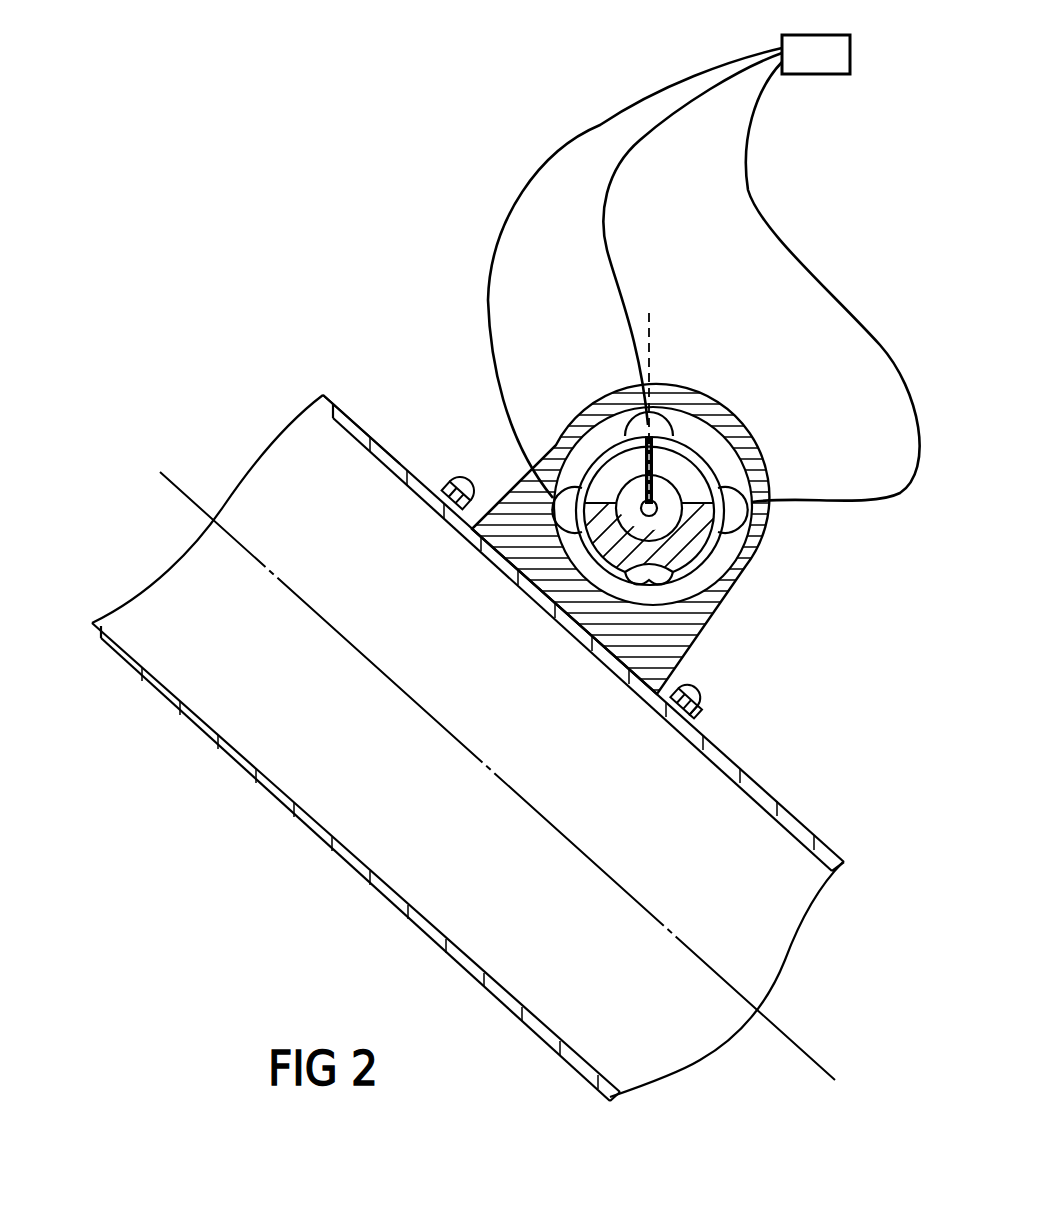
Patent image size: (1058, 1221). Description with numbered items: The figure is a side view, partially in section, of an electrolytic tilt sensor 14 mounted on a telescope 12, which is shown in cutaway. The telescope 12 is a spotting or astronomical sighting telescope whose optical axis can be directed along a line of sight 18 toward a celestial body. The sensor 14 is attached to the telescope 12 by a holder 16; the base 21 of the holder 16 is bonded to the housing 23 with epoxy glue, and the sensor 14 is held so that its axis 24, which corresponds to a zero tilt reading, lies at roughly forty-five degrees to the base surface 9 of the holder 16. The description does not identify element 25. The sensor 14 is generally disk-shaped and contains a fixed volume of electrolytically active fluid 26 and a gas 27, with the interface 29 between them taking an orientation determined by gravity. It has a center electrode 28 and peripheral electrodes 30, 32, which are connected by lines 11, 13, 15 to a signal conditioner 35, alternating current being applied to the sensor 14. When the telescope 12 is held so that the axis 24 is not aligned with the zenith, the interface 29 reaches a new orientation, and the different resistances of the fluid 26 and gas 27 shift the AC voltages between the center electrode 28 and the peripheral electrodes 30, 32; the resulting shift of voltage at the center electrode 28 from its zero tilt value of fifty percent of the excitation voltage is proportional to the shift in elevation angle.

The base surface 9 is at (550, 607).
The line 11 is at (487, 236).
The telescope 12 is at (372, 438).
The line 13 is at (604, 235).
The electrolytic tilt sensor 14 is at (695, 485).
The line 15 is at (762, 234).
The holder 16 is at (752, 592).
The line of sight 18 is at (190, 497).
The base 21 is at (700, 716).
The housing 23 is at (816, 842).
The axis 24 is at (681, 374).
The bolt 25 is at (470, 480).
The electrolytically active fluid 26 is at (603, 500).
The gas 27 is at (682, 470).
The center electrode 28 is at (634, 384).
The interface 29 is at (750, 452).
The peripheral electrode 30 is at (533, 480).
The peripheral electrode 32 is at (758, 512).
The signal conditioner 35 is at (816, 37).